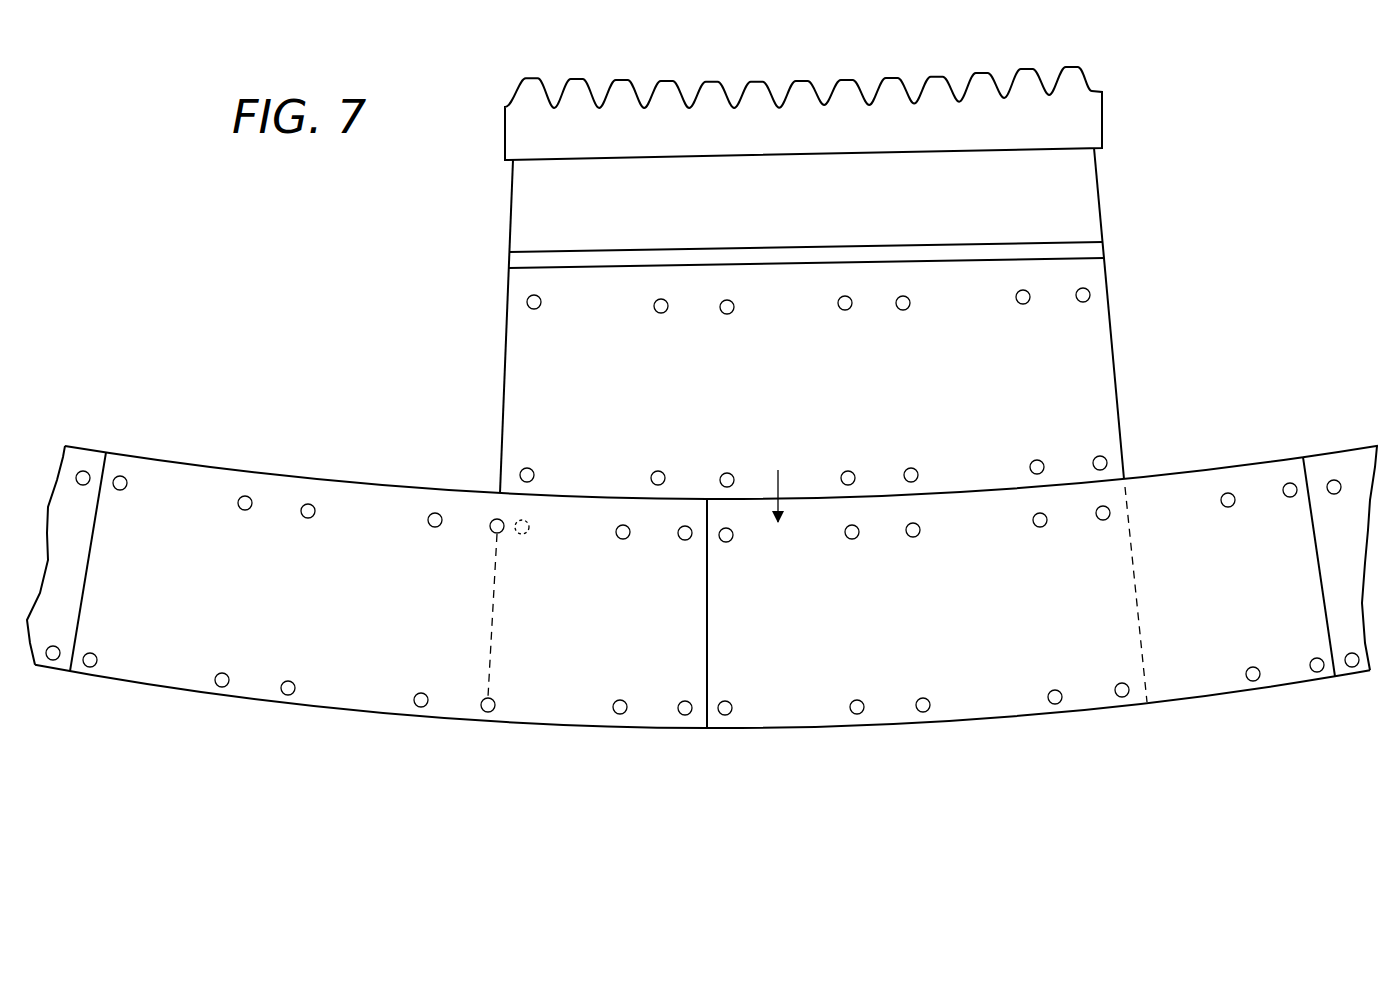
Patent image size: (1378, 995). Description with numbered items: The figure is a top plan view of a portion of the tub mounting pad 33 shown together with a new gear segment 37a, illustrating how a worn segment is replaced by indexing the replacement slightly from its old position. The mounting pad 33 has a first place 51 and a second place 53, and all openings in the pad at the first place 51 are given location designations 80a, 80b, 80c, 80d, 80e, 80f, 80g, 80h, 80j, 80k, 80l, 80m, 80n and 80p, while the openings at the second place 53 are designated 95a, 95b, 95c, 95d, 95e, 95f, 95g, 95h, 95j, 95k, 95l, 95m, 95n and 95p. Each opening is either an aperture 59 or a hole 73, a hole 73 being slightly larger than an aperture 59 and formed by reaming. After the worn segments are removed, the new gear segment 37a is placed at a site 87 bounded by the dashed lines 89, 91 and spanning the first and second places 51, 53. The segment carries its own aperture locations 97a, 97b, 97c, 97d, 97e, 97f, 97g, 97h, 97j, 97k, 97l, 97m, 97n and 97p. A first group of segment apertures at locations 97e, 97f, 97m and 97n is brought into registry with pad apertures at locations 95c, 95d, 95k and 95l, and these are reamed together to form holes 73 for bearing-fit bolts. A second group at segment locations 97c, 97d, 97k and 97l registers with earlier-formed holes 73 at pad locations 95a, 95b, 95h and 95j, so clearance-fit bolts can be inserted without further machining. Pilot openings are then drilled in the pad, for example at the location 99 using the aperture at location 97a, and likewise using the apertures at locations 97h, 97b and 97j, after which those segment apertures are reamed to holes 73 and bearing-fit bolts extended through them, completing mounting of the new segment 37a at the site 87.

The tub mounting pad 33 is at (60, 510).
The first place 51 is at (246, 469).
The second place 53 is at (1198, 470).
The site 87 is at (793, 697).
The new gear segment 37a is at (1083, 215).
The aperture 59 is at (918, 293).
The hole 73 is at (866, 542).
The dashed line 89 is at (492, 610).
The dashed line 91 is at (1133, 580).
The location 99 is at (516, 522).
The location 97a is at (529, 306).
The location 97b is at (660, 313).
The location 97c is at (731, 312).
The location 97d is at (845, 310).
The location 97e is at (908, 308).
The location 97f is at (1027, 304).
The location 97g is at (1089, 299).
The location 97h is at (522, 469).
The location 97j is at (658, 471).
The location 97k is at (755, 430).
The location 97l is at (852, 443).
The location 97m is at (905, 471).
The location 97n is at (1040, 460).
The location 97p is at (1104, 457).
The location 80a is at (125, 478).
The location 80b is at (244, 510).
The location 80c is at (314, 515).
The location 80d is at (436, 527).
The location 80e is at (492, 532).
The location 80f is at (627, 539).
The location 80g is at (687, 540).
The location 80h is at (95, 666).
The location 80j is at (222, 673).
The location 80k is at (282, 682).
The location 80l is at (422, 693).
The location 80m is at (493, 711).
The location 80n is at (620, 700).
The location 80p is at (690, 663).
The location 95a is at (724, 543).
The location 95b is at (847, 539).
The location 95c is at (917, 538).
The location 95d is at (1040, 527).
The location 95e is at (1105, 520).
The location 95f is at (1222, 505).
The location 95g is at (1292, 497).
The location 95h is at (725, 700).
The location 95j is at (867, 667).
The location 95k is at (918, 699).
The location 95l is at (1055, 690).
The location 95m is at (1122, 683).
The location 95n is at (1252, 667).
The location 95p is at (1317, 658).